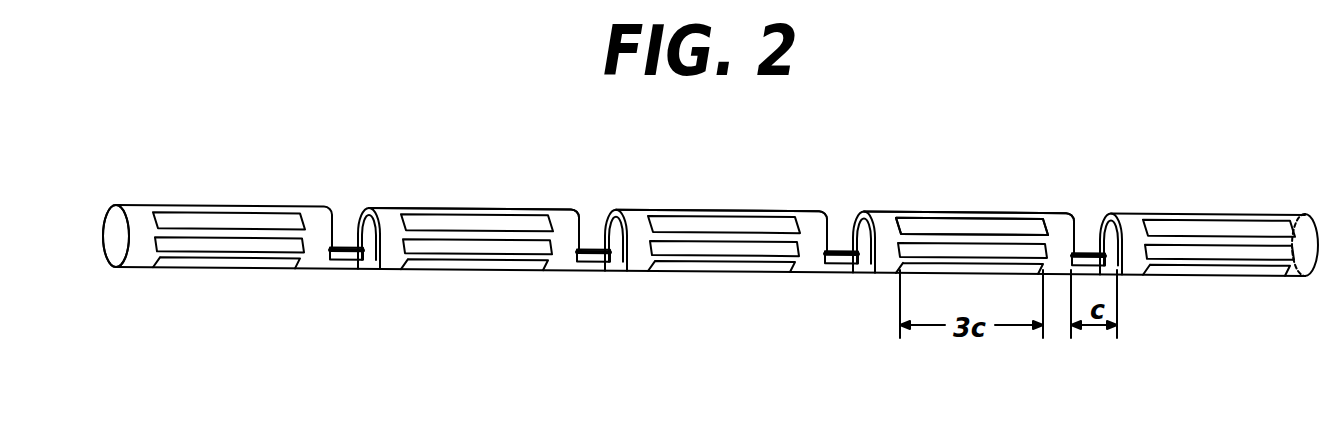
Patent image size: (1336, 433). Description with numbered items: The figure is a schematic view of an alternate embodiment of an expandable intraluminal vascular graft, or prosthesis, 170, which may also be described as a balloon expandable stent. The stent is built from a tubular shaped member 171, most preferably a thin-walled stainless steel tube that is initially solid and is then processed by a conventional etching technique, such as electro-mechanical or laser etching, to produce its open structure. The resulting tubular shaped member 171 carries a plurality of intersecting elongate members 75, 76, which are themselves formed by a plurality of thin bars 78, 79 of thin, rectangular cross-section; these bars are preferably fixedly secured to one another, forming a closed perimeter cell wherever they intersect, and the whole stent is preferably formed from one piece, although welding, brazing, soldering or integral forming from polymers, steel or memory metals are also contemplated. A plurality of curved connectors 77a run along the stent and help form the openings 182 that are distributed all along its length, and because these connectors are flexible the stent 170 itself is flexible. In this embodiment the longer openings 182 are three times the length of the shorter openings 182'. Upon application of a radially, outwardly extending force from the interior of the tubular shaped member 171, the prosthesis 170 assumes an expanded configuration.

The expandable intraluminal vascular graft 170 is at (226, 143).
The tubular shaped member 171 is at (115, 207).
The openings 182 is at (724, 191).
The openings 182' is at (685, 202).
The curved connectors 77a is at (1093, 227).
The elongate member 76 is at (884, 227).
The elongate member 75 is at (927, 213).
The thin bar 78 is at (563, 262).
The thin bar 79 is at (633, 257).